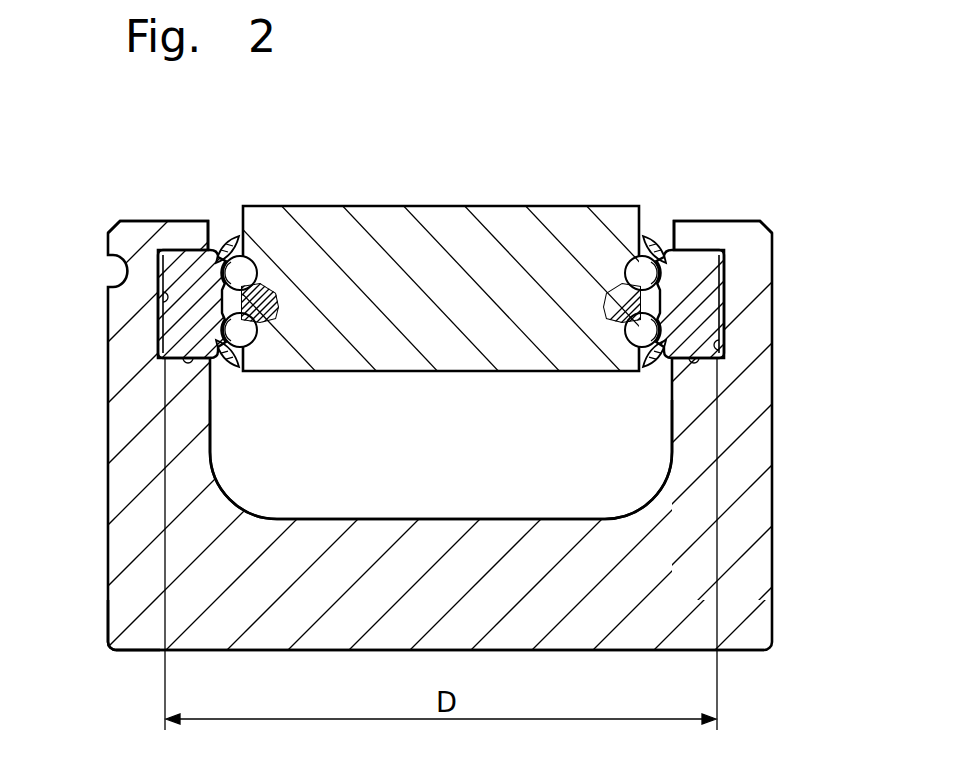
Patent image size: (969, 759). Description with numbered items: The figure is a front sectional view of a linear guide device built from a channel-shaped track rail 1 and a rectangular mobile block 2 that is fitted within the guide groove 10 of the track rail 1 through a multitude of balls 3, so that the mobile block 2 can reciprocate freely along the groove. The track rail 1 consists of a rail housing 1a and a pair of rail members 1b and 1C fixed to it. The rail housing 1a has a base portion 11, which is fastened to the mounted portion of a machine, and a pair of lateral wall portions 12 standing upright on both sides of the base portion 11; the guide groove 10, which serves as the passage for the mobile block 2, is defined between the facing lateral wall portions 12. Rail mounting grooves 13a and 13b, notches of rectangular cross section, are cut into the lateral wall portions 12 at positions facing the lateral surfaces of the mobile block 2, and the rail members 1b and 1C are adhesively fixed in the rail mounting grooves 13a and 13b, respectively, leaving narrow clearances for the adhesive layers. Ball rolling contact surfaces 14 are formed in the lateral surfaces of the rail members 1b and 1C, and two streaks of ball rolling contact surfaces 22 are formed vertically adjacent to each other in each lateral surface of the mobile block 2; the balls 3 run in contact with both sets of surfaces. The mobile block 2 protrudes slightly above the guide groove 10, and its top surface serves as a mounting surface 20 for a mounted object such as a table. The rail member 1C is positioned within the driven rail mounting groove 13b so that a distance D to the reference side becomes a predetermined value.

The track rail 1 is at (484, 471).
The rail housing 1a is at (102, 642).
The rail member 1b is at (162, 274).
The rail member 1C is at (705, 277).
The mobile block 2 is at (459, 259).
The balls 3 is at (255, 318).
The guide groove 10 is at (484, 518).
The base portion 11 is at (318, 552).
The lateral wall portions 12 is at (135, 463).
The rail mounting groove 13a is at (160, 306).
The rail mounting groove 13b is at (710, 352).
The ball rolling contact surfaces 14 is at (195, 258).
The mounting surface 20 is at (401, 205).
The ball rolling contact surfaces 22 is at (647, 246).